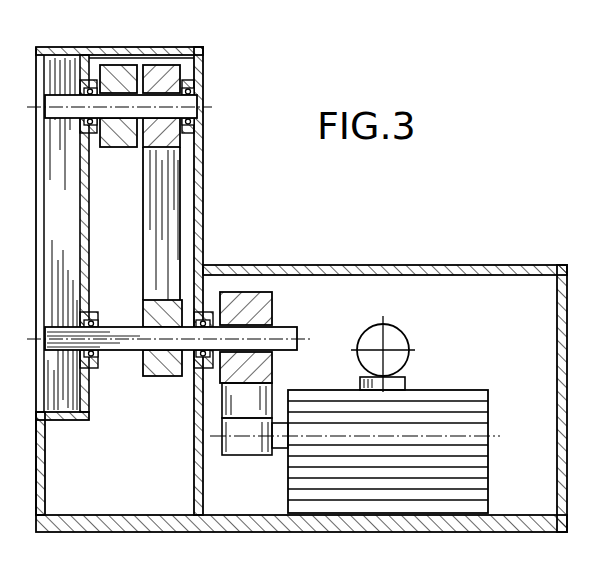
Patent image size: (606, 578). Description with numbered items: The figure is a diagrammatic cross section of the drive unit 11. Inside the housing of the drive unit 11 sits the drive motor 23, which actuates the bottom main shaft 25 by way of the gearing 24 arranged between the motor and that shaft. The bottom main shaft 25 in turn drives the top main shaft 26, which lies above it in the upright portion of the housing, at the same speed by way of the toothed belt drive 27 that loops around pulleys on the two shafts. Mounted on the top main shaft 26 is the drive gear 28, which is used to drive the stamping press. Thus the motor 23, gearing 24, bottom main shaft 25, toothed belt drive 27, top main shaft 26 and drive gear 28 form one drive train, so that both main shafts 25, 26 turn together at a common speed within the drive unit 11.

The drive unit 11 is at (380, 266).
The drive motor 23 is at (458, 396).
The gearing 24 is at (272, 377).
The bottom main shaft 25 is at (63, 343).
The top main shaft 26 is at (63, 113).
The toothed belt drive 27 is at (155, 208).
The drive gear 28 is at (118, 72).